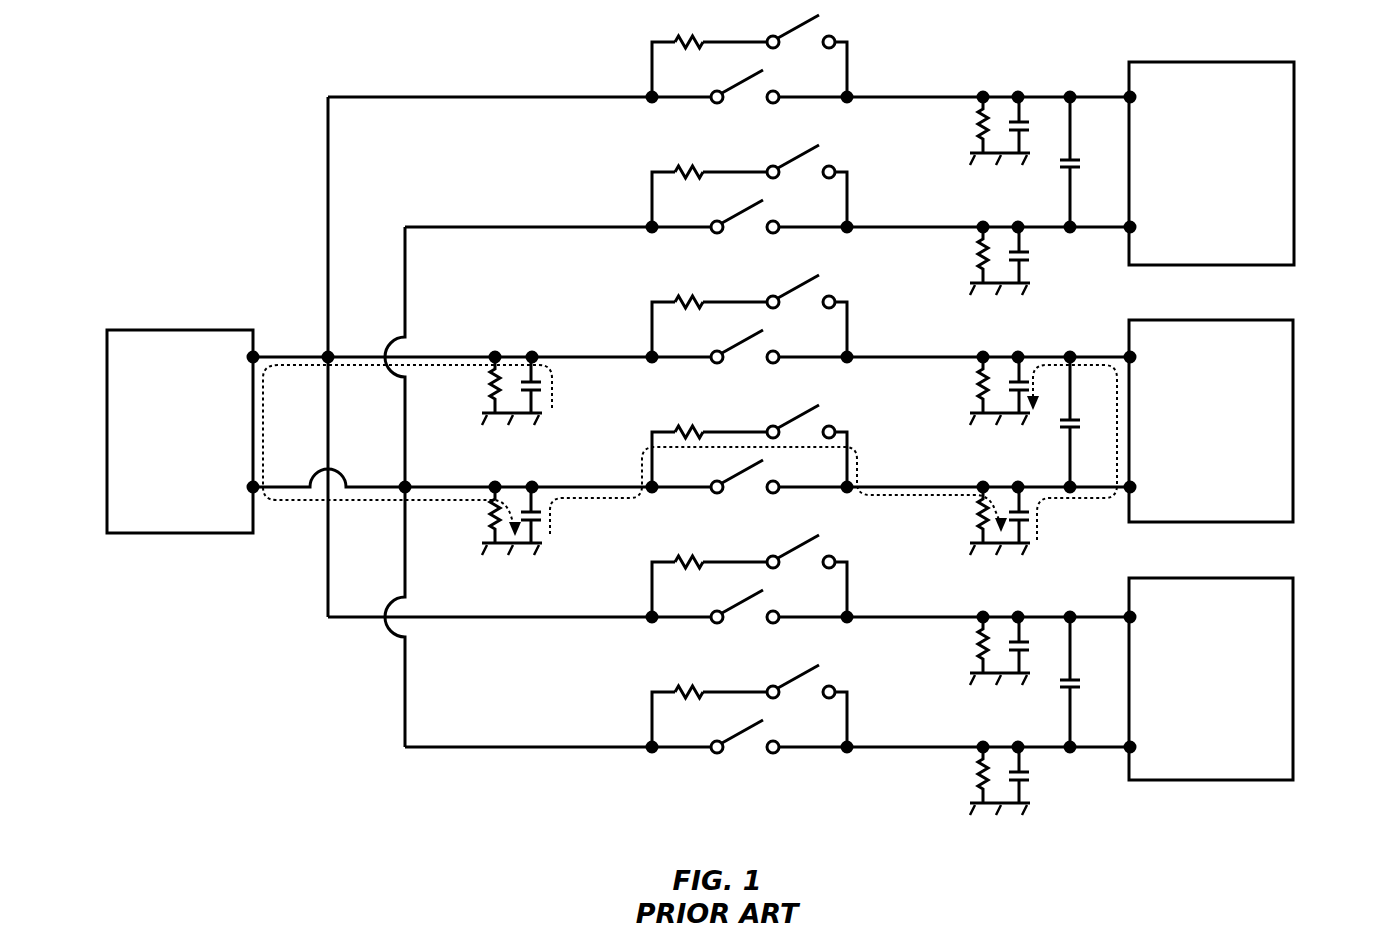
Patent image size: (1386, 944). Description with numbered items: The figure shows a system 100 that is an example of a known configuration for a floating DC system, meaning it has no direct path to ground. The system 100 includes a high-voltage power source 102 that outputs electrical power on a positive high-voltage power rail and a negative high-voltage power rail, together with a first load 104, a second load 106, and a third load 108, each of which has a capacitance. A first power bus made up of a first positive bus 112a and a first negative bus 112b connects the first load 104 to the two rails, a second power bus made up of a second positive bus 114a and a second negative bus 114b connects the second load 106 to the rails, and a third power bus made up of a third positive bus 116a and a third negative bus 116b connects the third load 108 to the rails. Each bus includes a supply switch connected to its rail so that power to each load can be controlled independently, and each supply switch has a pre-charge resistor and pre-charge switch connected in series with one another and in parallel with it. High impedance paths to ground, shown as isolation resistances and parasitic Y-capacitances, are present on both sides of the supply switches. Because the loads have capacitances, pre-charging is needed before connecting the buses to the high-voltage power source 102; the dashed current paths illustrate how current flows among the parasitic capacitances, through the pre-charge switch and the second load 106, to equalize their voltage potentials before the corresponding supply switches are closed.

The system 100 is at (227, 168).
The high-voltage power source 102 is at (178, 534).
The first load 104 is at (1295, 165).
The second load 106 is at (1294, 424).
The third load 108 is at (1294, 681).
The first positive bus 112a is at (897, 97).
The first negative bus 112b is at (897, 227).
The second positive bus 114a is at (897, 357).
The second negative bus 114b is at (897, 487).
The third positive bus 116a is at (897, 617).
The third negative bus 116b is at (897, 747).